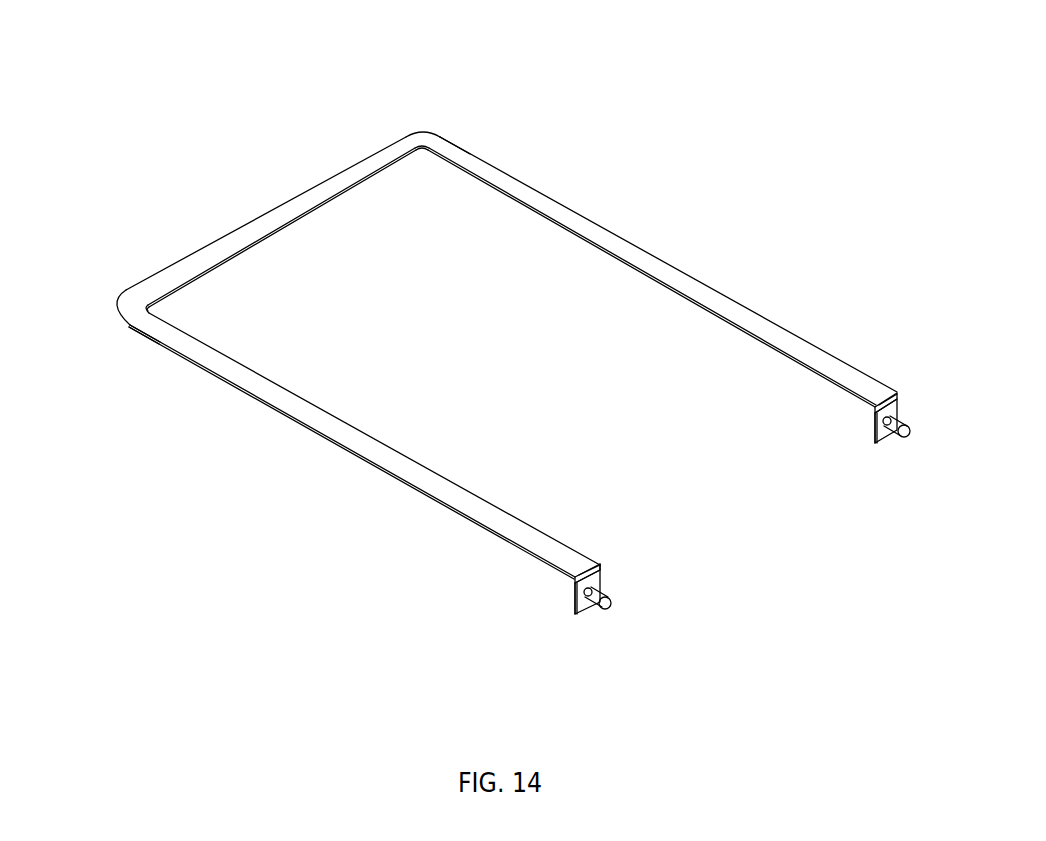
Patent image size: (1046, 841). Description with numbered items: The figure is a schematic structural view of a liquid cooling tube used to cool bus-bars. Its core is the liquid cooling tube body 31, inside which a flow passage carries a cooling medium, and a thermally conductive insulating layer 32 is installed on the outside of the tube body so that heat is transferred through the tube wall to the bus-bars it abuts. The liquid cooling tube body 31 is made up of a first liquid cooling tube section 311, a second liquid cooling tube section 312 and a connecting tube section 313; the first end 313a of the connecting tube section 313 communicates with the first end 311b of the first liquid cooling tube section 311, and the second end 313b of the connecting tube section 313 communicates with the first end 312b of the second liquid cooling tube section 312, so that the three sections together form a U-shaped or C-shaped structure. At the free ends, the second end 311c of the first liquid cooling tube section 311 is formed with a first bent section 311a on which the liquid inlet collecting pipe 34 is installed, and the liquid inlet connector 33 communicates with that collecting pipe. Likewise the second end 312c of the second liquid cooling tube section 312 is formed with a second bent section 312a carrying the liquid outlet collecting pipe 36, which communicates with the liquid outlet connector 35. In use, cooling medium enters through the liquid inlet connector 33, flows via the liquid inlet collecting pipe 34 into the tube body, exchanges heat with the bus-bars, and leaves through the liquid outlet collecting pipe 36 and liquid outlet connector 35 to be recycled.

The liquid cooling tube body 31 is at (605, 567).
The first liquid cooling tube section 311 is at (375, 467).
The first bent section 311a is at (601, 576).
The first end of the first liquid cooling tube section 311b is at (133, 334).
The second end of the first liquid cooling tube section 311c is at (573, 582).
The second liquid cooling tube section 312 is at (689, 276).
The second bent section 312a is at (873, 415).
The first end of the second liquid cooling tube section 312b is at (465, 146).
The second end of the second liquid cooling tube section 312c is at (898, 393).
The connecting tube section 313 is at (195, 250).
The first end of the connecting tube section 313a is at (128, 284).
The second end of the connecting tube section 313b is at (394, 137).
The thermally conductive insulating layer 32 is at (330, 181).
The liquid inlet connector 33 is at (593, 614).
The liquid inlet collecting pipe 34 is at (571, 607).
The liquid outlet connector 35 is at (895, 437).
The liquid outlet collecting pipe 36 is at (875, 437).